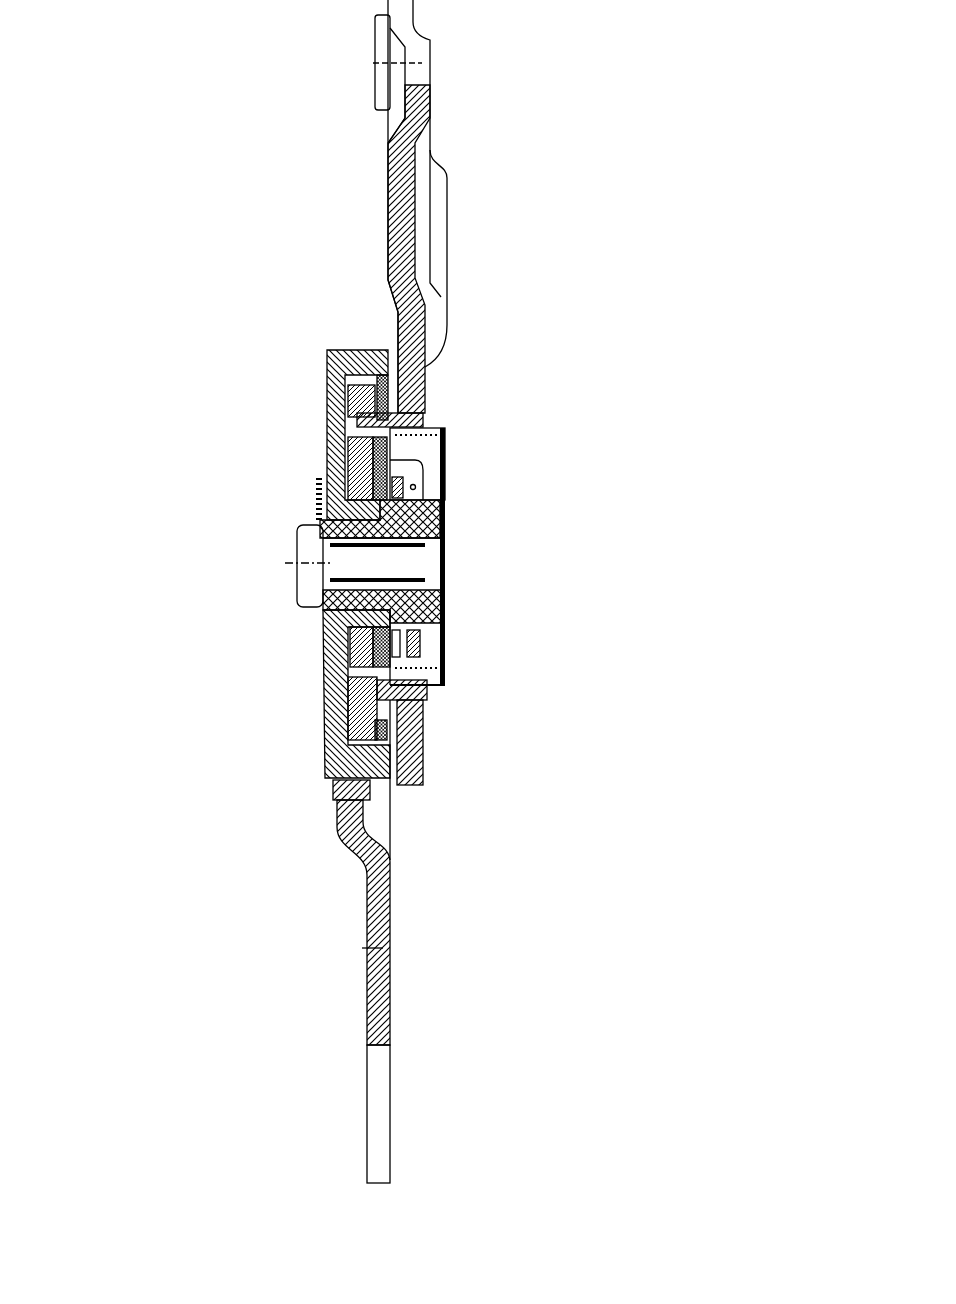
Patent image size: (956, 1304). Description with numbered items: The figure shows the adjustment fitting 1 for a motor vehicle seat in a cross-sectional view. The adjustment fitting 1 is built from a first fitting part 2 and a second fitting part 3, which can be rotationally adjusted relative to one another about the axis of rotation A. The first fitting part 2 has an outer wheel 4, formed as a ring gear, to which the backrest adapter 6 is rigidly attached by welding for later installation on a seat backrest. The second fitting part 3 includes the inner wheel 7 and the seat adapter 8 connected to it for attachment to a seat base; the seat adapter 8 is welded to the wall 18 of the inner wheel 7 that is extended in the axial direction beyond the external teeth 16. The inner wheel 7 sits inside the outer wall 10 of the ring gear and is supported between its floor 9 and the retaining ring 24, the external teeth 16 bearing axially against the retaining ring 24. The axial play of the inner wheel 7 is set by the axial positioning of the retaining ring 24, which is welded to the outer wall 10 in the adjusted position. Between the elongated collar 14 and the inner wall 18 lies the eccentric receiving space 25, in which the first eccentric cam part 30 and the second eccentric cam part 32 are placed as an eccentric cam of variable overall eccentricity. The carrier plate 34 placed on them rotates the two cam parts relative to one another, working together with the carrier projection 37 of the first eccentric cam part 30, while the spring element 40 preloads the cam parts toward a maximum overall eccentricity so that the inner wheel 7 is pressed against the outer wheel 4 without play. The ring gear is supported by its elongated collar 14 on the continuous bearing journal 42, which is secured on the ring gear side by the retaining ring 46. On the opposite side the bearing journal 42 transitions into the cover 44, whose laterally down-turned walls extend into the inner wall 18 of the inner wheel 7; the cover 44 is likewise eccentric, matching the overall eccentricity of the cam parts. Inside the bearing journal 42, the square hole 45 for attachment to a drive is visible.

The adjustment fitting 1 is at (127, 480).
The first fitting part 2 is at (319, 806).
The second fitting part 3 is at (457, 364).
The outer wheel 4 is at (323, 689).
The backrest adapter 6 is at (367, 988).
The inner wheel 7 is at (380, 395).
The seat adapter 8 is at (427, 108).
The floor 9 is at (355, 720).
The outer wall 10 is at (390, 798).
The elongated collar 14 is at (400, 585).
The external teeth 16 is at (375, 725).
The inner wall 18 is at (425, 420).
The retaining ring 24 is at (345, 350).
The eccentric receiving space 25 is at (365, 420).
The first eccentric cam part 30 is at (360, 460).
The second eccentric cam part 32 is at (405, 447).
The carrier plate 34 is at (410, 637).
The carrier projection 37 is at (420, 707).
The spring element 40 is at (423, 648).
The bearing journal 42 is at (307, 582).
The cover 44 is at (437, 512).
The square hole 45 is at (330, 548).
The retaining ring 46 is at (315, 500).
The axis of rotation A is at (330, 560).